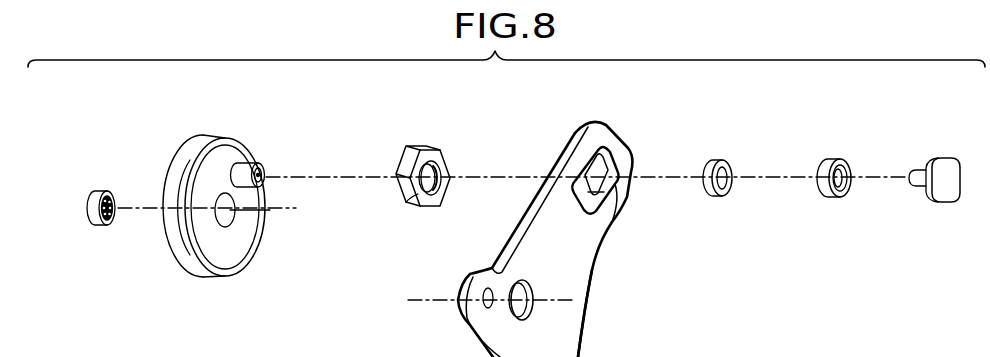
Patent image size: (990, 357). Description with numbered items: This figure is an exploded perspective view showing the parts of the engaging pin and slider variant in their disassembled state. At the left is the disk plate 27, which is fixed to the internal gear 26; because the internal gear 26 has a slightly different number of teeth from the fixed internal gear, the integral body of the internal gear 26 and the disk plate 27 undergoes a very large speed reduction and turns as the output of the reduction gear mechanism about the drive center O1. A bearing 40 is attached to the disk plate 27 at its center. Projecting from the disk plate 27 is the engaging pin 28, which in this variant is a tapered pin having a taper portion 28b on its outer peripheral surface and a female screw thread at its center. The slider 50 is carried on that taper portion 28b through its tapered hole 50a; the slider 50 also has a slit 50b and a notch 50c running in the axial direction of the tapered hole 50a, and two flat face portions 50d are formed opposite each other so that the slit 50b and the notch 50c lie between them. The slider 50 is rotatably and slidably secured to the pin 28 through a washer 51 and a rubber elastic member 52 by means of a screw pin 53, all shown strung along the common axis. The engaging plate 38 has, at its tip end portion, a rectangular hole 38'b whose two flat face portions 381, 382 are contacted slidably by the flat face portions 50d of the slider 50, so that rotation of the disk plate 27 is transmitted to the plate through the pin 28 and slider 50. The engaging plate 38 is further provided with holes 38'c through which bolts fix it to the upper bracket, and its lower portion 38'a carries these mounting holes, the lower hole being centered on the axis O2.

The internal gear 26 is at (174, 168).
The disk plate 27 is at (220, 153).
The engaging pin 28 is at (248, 160).
The taper portion 28b is at (232, 212).
The bearing 40 is at (95, 185).
The slider 50 is at (434, 164).
The tapered hole 50a is at (445, 188).
The slit 50b is at (412, 203).
The notch 50c is at (446, 164).
The flat face portions 50d is at (412, 160).
The engaging plate 38 is at (551, 220).
The flat face portion of rectangular hole 381 is at (590, 166).
The flat face portion of rectangular hole 382 is at (605, 192).
The arm edge portion 38'a is at (613, 313).
The rectangular hole 38'b is at (637, 235).
The holes 38'c is at (454, 315).
The washer 51 is at (726, 158).
The elastic member 52 is at (842, 158).
The screw pin 53 is at (948, 156).
The drive center O1 is at (296, 208).
The axis O2 is at (533, 300).